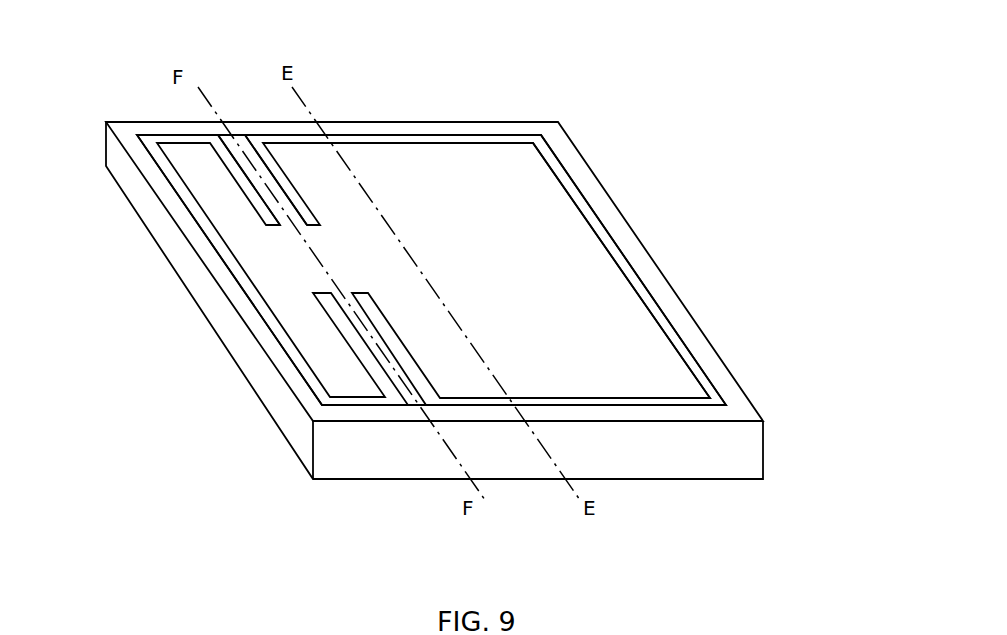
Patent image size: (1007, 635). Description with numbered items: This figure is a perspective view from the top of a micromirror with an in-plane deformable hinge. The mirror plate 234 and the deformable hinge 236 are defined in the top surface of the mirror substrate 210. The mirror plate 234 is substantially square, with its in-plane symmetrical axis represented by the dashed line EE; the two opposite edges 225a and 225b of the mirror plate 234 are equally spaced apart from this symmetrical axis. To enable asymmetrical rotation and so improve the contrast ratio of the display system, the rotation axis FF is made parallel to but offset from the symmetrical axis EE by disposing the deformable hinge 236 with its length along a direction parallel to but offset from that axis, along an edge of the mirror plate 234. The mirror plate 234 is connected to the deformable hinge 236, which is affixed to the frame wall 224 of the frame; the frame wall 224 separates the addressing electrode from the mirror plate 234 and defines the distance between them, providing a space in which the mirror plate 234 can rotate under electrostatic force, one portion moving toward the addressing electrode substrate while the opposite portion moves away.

The mirror substrate 210 is at (707, 466).
The frame wall 224 is at (585, 182).
The first edge of the mirror plate 225a is at (610, 250).
The second edge of the mirror plate 225b is at (235, 258).
The mirror plate 234 is at (439, 165).
The deformable hinge 236 is at (243, 164).